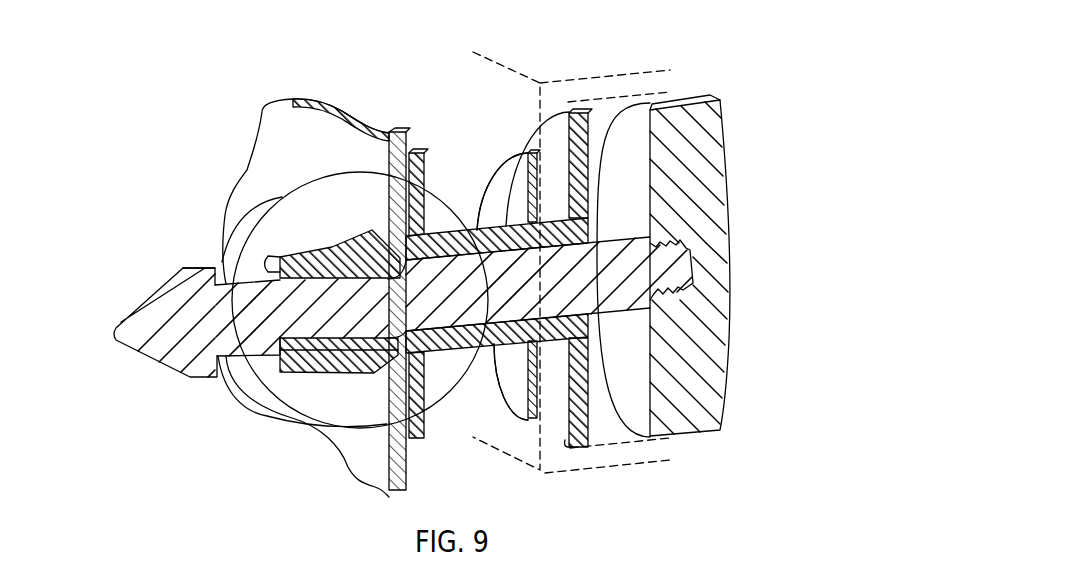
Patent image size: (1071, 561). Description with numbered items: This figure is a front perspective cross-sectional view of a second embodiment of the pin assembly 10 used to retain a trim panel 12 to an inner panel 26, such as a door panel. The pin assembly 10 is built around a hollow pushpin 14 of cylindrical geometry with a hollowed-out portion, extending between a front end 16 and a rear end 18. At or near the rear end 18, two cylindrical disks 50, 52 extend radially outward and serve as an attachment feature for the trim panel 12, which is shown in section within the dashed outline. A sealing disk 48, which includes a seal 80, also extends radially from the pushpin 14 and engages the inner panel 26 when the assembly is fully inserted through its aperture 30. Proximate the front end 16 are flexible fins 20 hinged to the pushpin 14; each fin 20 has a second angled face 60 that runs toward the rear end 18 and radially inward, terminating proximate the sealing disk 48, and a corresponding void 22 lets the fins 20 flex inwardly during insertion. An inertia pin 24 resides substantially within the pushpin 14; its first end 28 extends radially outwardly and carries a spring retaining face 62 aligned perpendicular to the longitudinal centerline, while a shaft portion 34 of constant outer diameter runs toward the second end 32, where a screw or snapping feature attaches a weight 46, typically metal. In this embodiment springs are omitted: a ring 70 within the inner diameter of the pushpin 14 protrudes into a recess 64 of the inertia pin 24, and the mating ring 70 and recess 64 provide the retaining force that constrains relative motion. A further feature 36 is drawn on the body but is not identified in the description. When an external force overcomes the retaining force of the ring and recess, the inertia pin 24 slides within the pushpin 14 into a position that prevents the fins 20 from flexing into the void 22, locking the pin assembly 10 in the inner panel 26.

The pin assembly 10 is at (432, 110).
The trim panel 12 is at (634, 62).
The hollow pushpin 14 is at (495, 236).
The front end of the hollow pushpin 16 is at (429, 295).
The rear end of the hollow pushpin 18 is at (588, 136).
The flexible fin 20 is at (350, 220).
The void 22 is at (375, 372).
The inertia pin 24 is at (515, 222).
The inner panel 26 is at (282, 138).
The first end of the inertia pin 28 is at (115, 333).
The aperture 30 is at (432, 232).
The second end of the inertia pin 32 is at (688, 268).
The shaft portion 34 is at (452, 300).
The body 36 is at (258, 334).
The weight 46 is at (704, 358).
The sealing disk 48 is at (427, 437).
The cylindrical disk 50 is at (520, 390).
The cylindrical disk 52 is at (555, 363).
The second angled face 60 is at (374, 230).
The spring retaining face 62 is at (222, 263).
The recess 64 is at (267, 270).
The ring 70 is at (318, 260).
The seal 80 is at (427, 432).